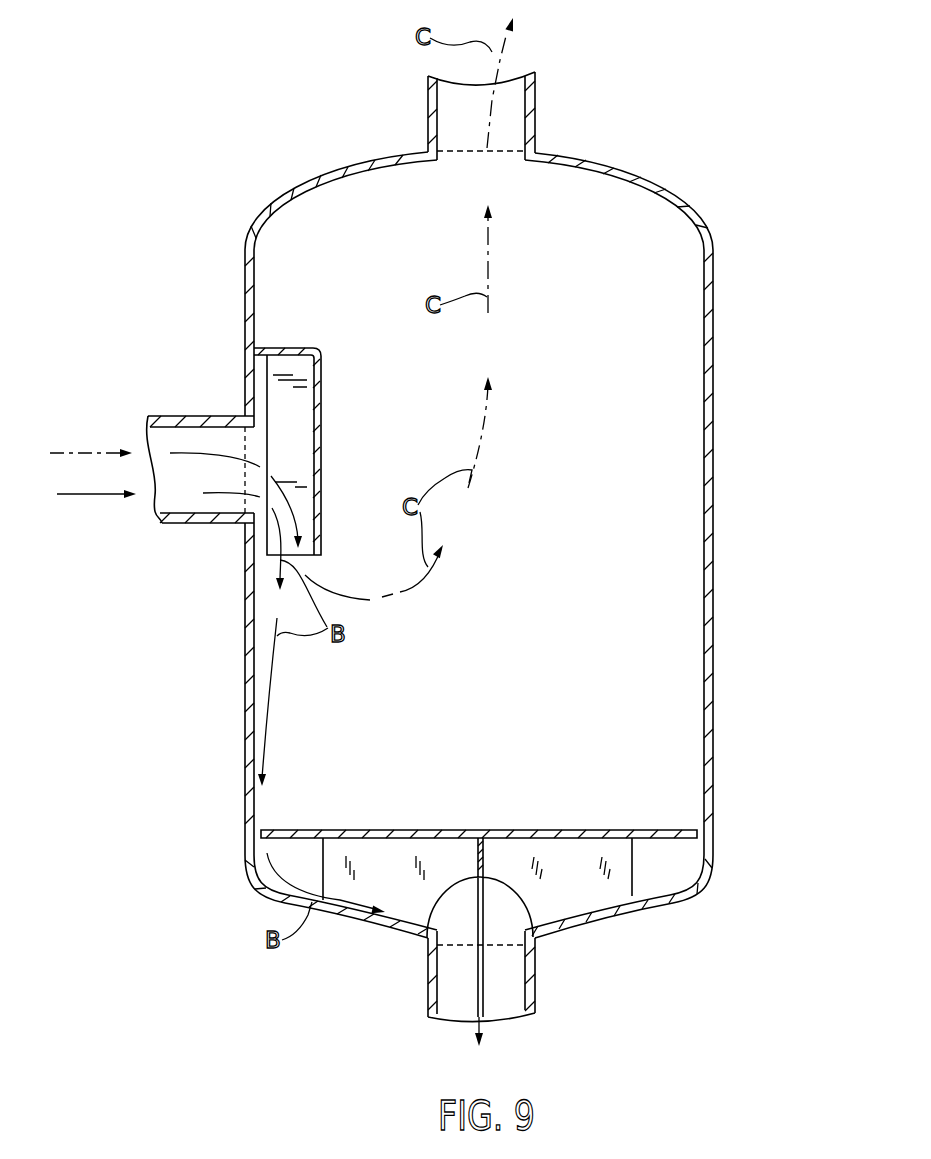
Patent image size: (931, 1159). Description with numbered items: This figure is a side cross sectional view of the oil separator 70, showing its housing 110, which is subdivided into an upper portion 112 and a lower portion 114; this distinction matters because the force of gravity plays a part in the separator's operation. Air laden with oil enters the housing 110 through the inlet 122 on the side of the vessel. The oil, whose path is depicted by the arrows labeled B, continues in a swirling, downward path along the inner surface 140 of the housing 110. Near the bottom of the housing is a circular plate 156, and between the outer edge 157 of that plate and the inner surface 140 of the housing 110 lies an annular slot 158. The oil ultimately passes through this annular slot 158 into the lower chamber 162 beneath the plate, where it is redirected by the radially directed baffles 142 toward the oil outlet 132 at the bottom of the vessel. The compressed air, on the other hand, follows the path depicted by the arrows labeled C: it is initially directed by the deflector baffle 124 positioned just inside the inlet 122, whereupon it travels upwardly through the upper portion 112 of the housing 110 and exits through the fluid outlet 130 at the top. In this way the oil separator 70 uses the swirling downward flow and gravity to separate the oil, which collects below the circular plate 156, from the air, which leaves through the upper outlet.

The oil separator 70 is at (735, 383).
The housing 110 is at (713, 630).
The upper portion 112 is at (683, 298).
The lower portion 114 is at (684, 694).
The inlet 122 is at (199, 416).
The deflector baffle 124 is at (319, 431).
The fluid outlet 130 is at (535, 123).
The oil outlet 132 is at (535, 964).
The inner surface 140 is at (704, 541).
The radially directed baffles 142 is at (406, 907).
The circular plate 156 is at (398, 830).
The outer edge 157 is at (683, 830).
The annular slot 158 is at (704, 836).
The lower chamber 162 is at (655, 874).